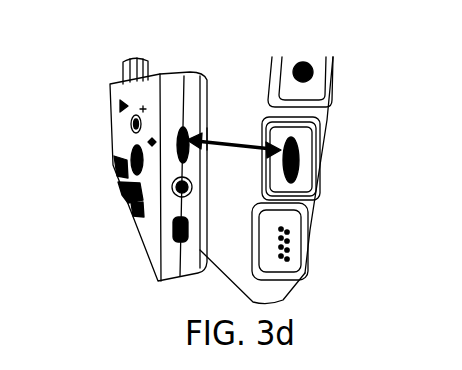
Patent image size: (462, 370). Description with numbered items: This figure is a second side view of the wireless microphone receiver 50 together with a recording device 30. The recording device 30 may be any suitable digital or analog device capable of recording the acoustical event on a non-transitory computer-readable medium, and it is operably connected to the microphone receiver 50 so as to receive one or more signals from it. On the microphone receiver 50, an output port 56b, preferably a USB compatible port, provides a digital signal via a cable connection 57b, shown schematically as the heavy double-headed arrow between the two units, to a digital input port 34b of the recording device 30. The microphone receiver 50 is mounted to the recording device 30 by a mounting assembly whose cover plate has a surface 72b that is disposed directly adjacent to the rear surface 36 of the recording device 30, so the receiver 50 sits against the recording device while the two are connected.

The recording device 30 is at (327, 152).
The digital input port 34b is at (297, 143).
The rear surface 36 is at (244, 230).
The microphone receiver 50 is at (107, 135).
The output port 56b is at (183, 130).
The cable connection 57b is at (227, 137).
The surface of cover plate 72b is at (207, 137).